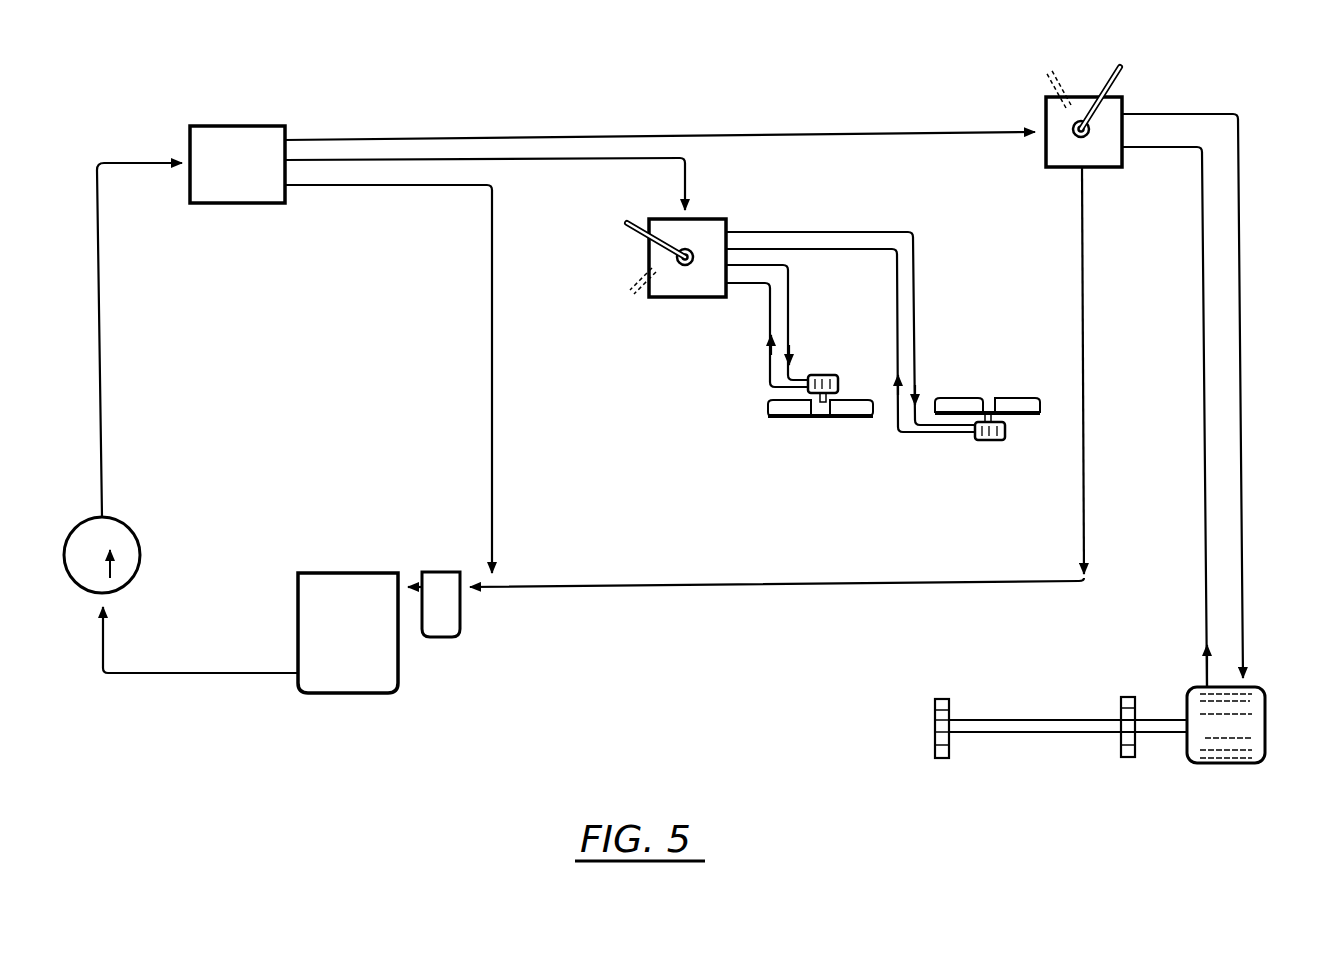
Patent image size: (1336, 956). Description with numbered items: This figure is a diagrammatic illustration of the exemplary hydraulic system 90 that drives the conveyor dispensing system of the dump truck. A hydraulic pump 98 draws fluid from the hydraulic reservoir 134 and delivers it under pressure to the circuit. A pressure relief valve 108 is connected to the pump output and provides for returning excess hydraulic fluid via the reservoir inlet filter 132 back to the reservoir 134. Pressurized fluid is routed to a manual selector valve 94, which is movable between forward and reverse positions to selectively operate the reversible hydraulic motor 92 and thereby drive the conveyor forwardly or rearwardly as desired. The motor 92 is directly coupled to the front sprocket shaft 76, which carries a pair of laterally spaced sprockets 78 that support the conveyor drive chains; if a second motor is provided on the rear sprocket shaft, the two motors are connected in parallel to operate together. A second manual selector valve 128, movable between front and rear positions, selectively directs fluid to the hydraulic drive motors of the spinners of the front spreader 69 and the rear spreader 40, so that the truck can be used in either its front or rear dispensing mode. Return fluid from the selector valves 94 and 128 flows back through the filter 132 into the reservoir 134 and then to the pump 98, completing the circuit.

The hydraulic system 90 is at (200, 740).
The pressure relief valve 108 is at (253, 172).
The second manual selector valve 128 is at (706, 219).
The manual selector valve 94 is at (1046, 155).
The front spreader 69 is at (822, 372).
The rear spreader 40 is at (985, 392).
The hydraulic pump 98 is at (130, 532).
The hydraulic reservoir 134 is at (365, 634).
The reservoir inlet filter 132 is at (460, 620).
The reversible hydraulic motor 92 is at (1265, 694).
The sprocket shaft 76 is at (1018, 720).
The sprockets 78 is at (942, 698).